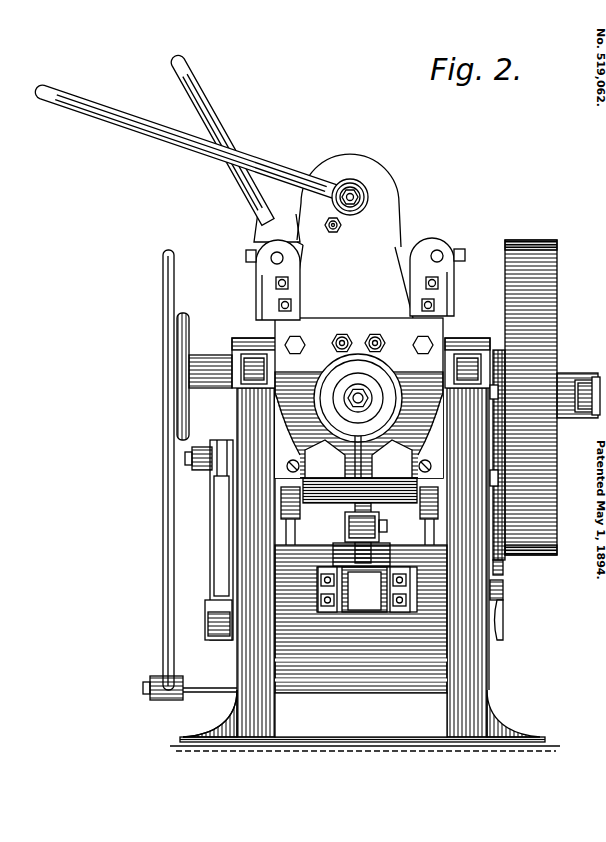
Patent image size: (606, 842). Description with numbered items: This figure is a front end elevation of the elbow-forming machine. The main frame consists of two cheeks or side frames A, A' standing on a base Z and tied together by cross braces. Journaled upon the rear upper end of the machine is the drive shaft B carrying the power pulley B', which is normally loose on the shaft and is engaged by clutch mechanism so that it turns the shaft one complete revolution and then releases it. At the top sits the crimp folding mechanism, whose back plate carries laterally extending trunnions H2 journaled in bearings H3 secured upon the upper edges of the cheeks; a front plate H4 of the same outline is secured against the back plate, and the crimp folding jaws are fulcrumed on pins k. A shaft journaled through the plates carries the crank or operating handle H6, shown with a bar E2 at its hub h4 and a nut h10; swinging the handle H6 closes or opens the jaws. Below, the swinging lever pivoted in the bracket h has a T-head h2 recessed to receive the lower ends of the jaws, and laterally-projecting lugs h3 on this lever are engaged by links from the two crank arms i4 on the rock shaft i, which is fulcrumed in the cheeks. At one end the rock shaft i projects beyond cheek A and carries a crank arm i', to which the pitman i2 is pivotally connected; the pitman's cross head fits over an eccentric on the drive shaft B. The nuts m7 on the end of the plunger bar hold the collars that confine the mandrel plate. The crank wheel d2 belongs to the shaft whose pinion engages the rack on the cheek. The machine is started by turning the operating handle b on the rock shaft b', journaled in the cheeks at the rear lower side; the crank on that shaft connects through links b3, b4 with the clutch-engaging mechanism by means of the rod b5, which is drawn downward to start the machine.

The crank or operating handle H6 is at (158, 141).
The lever bar E2 is at (240, 183).
The front plate H4 is at (384, 200).
The pivot boss h4 is at (364, 187).
The nut h10 is at (413, 245).
The laterally-projecting lugs h3 is at (463, 228).
The power pulley B' is at (536, 379).
The crank wheel d2 is at (187, 341).
The bearings H3 is at (462, 322).
The operating handle b is at (177, 475).
The pins k is at (373, 336).
The trunnions H2 is at (500, 355).
The nuts m7 is at (367, 400).
The drive shaft B is at (578, 412).
The pitman i2 is at (195, 462).
The crank arm i' is at (175, 540).
The T-head h2 is at (345, 494).
The crank arms i4 is at (458, 537).
The bracket h is at (362, 568).
The rod b5 is at (503, 578).
The link b4 is at (503, 595).
The link b3 is at (503, 626).
The cheek or side frame A is at (229, 562).
The cheek or side frame A' is at (493, 562).
The rock shaft b' is at (361, 641).
The base Z is at (421, 668).
The rock shaft i is at (180, 620).